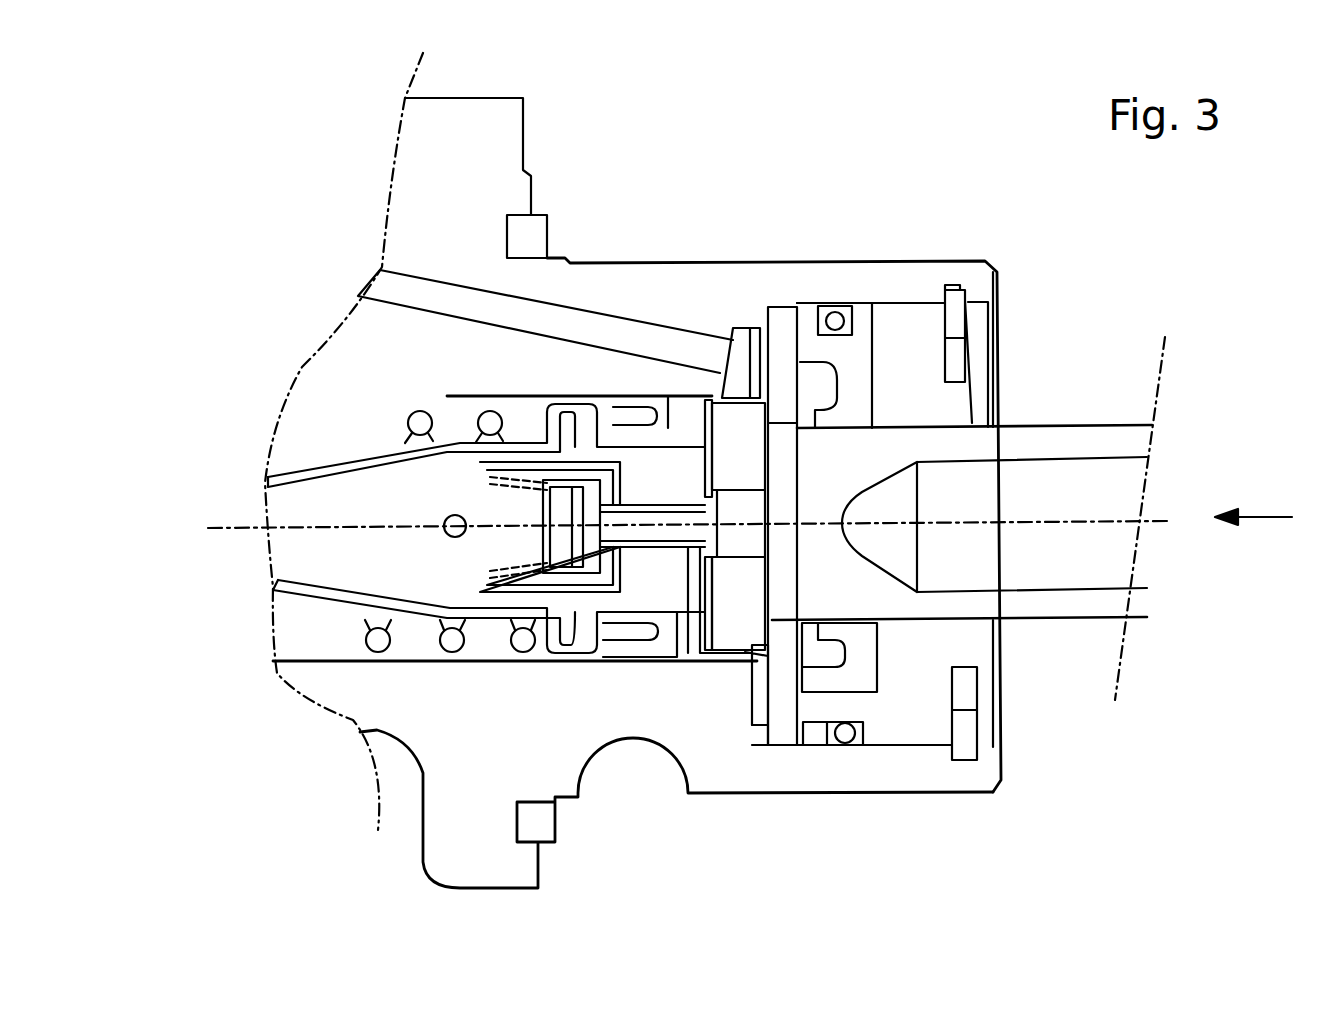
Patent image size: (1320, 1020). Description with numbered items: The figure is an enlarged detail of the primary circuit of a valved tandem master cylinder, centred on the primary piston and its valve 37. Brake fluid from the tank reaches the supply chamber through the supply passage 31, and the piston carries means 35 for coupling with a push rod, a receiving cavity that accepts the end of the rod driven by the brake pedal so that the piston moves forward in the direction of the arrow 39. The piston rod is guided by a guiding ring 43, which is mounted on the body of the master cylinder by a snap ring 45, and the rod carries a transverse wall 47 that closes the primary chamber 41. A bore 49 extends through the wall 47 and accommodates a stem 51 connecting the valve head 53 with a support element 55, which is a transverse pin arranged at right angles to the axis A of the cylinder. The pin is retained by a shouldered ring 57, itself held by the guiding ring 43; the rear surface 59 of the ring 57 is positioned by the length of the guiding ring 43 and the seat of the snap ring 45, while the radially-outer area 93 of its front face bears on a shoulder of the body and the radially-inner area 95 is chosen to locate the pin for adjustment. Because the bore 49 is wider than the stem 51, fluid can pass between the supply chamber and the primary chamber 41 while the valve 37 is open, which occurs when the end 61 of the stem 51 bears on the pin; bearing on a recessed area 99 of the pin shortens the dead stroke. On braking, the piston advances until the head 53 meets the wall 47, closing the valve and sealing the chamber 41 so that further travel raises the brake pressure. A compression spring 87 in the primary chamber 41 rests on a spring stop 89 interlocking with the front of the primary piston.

The supply passage 31 is at (427, 278).
The means for coupling with a push rod 35 is at (1038, 514).
The valve 37 is at (677, 486).
The arrow 39 is at (1258, 517).
The primary chamber 41 is at (1070, 427).
The guiding ring 43 is at (921, 364).
The snap ring 45 is at (967, 737).
The transverse wall 47 is at (698, 605).
The bore 49 is at (643, 540).
The stem 51 is at (685, 605).
The valve head 53 is at (533, 520).
The support element 55 is at (797, 510).
The ring 57 is at (787, 730).
The rear surface 59 is at (848, 745).
The end of the stem 61 is at (727, 522).
The compression spring 87 is at (378, 640).
The spring stop 89 is at (277, 474).
The radially-outer area 93 is at (762, 740).
The radially-inner area 95 is at (740, 663).
The recessed area 99 is at (768, 545).
The axis A is at (228, 533).